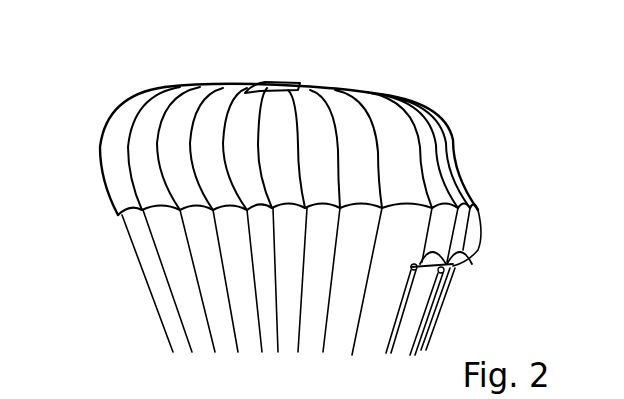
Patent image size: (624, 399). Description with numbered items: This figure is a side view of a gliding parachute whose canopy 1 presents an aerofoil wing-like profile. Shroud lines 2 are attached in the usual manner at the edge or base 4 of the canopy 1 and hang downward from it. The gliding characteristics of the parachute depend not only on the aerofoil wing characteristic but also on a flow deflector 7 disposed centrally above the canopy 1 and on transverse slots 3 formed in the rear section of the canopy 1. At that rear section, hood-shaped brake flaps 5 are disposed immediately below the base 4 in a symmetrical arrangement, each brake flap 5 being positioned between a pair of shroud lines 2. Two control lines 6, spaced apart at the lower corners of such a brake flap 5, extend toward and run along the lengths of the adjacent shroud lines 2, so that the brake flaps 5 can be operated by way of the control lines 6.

The canopy 1 is at (123, 124).
The shroud lines 2 is at (150, 297).
The transverse slots 3 is at (462, 158).
The base 4 is at (124, 219).
The brake flaps 5 is at (470, 242).
The control lines 6 is at (412, 340).
The flow deflector 7 is at (276, 78).